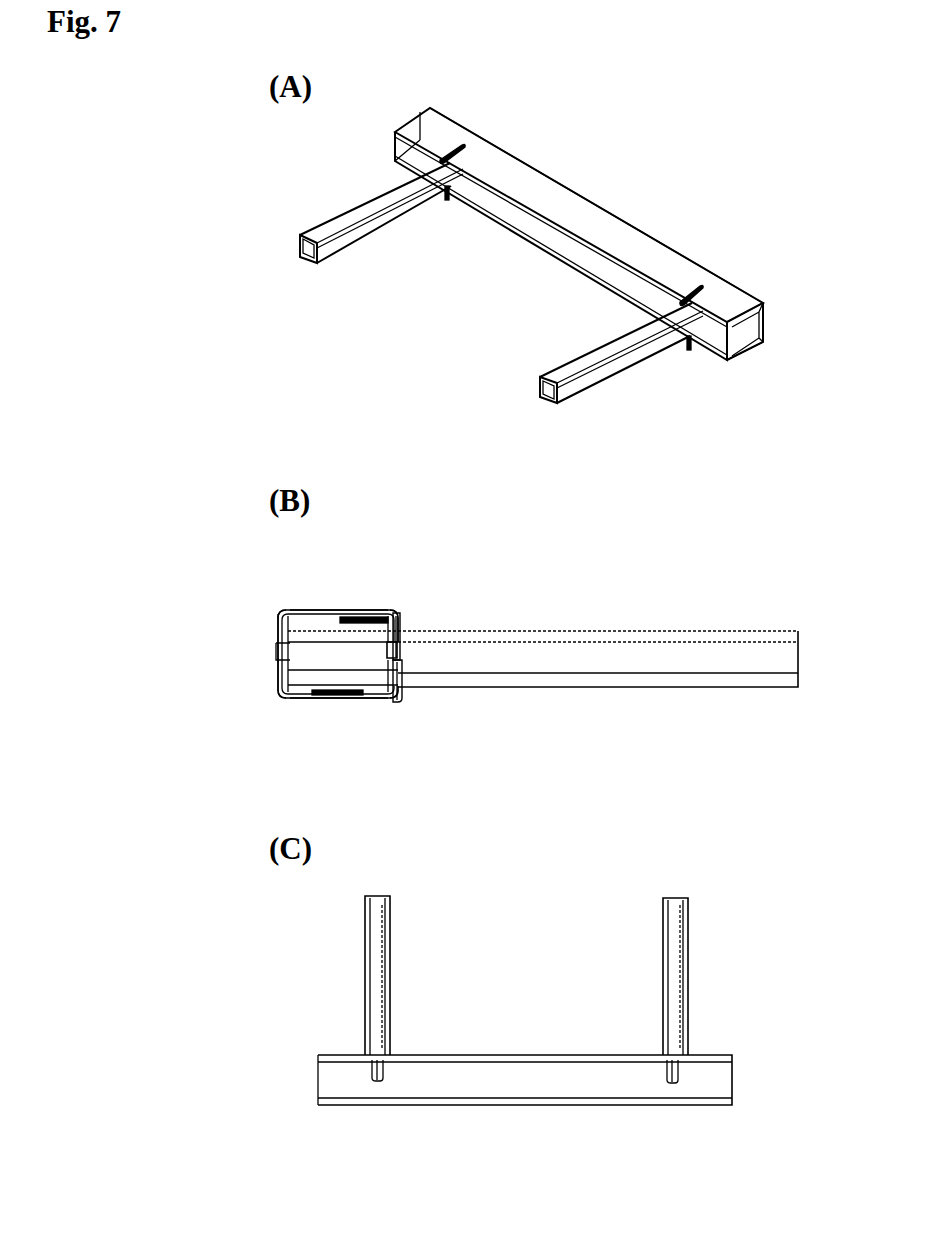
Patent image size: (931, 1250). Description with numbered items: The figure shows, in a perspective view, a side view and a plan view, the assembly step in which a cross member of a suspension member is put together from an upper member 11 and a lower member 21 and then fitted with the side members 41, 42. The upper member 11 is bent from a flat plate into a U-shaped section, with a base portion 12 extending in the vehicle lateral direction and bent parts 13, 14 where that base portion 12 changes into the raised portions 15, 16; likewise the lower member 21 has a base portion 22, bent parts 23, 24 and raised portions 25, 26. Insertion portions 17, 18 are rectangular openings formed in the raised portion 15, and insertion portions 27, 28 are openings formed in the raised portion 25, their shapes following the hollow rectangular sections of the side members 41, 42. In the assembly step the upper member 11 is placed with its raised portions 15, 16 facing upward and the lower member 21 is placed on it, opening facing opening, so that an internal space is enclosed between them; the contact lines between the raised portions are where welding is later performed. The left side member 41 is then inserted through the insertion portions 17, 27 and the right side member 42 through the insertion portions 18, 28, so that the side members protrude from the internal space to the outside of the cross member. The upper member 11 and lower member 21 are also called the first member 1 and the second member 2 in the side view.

In FIG. 7B, the connecting structure 1 is at (274, 648).
In FIG. 7B, the arm member 2 is at (448, 628).
In FIG. 7A, the upper member 11 is at (768, 306).
In FIG. 7B, the upper member 11 is at (337, 654).
In FIG. 7C, the upper member 11 is at (525, 1080).
In FIG. 7B, the base portion 12 is at (334, 702).
In FIG. 7B, the bent part 13 is at (282, 702).
In FIG. 7B, the bent part 14 is at (396, 702).
In FIG. 7A, the raised portion 15 is at (521, 234).
In FIG. 7B, the raised portion 15 is at (276, 682).
In FIG. 7B, the raised portion 16 is at (404, 688).
In FIG. 7A, the insertion portion 17 is at (449, 192).
In FIG. 7C, the insertion portion 17 is at (377, 1070).
In FIG. 7A, the insertion portion 18 is at (690, 338).
In FIG. 7C, the insertion portion 18 is at (672, 1071).
In FIG. 7A, the lower member 21 is at (745, 331).
In FIG. 7B, the base portion 22 is at (346, 610).
In FIG. 7B, the bent part 23 is at (287, 610).
In FIG. 7B, the bent part 24 is at (392, 620).
In FIG. 7A, the raised portion 25 is at (548, 206).
In FIG. 7B, the raised portion 25 is at (280, 624).
In FIG. 7B, the raised portion 26 is at (404, 630).
In FIG. 7A, the insertion portion 27 is at (470, 152).
In FIG. 7A, the insertion portion 28 is at (705, 298).
In FIG. 7A, the side member 41 is at (377, 236).
In FIG. 7C, the side member 41 is at (377, 975).
In FIG. 7A, the side member 42 is at (617, 374).
In FIG. 7C, the side member 42 is at (675, 976).